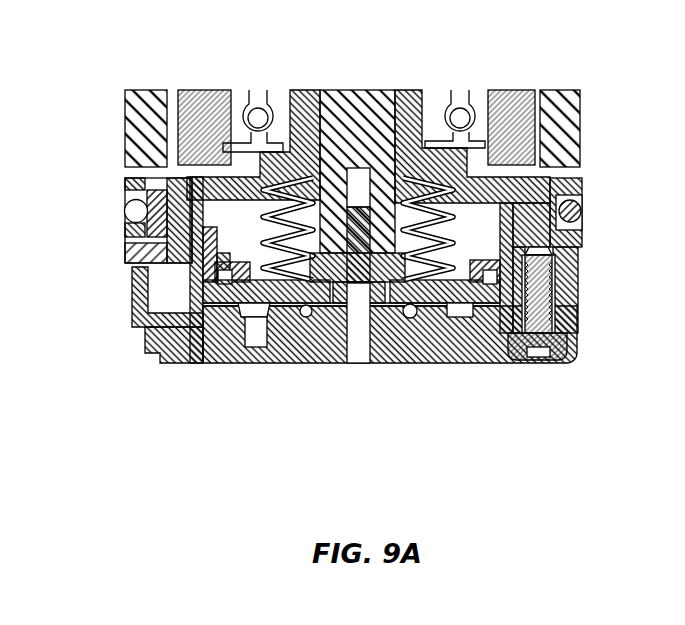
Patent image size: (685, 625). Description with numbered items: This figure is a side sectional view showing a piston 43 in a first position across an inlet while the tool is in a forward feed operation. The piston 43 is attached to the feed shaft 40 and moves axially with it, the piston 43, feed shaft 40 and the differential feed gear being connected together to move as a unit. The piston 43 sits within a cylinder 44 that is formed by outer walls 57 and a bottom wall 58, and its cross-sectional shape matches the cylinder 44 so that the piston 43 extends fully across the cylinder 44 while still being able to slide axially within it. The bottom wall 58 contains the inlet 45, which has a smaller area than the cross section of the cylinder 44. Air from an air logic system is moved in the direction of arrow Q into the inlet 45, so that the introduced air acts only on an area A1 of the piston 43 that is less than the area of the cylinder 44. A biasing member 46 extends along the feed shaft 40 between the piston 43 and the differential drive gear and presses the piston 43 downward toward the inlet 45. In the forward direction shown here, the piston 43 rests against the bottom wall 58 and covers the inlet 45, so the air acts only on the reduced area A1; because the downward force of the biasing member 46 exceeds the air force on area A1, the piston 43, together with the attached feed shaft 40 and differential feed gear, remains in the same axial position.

The feed shaft 40 is at (365, 122).
The piston 43 is at (240, 293).
The cylinder 44 is at (240, 234).
The inlet 45 is at (345, 348).
The biasing member 46 is at (430, 212).
The outer walls 57 is at (507, 240).
The bottom wall 58 is at (410, 336).
The direction of air flow Q is at (358, 380).
The area of the piston exposed through the inlet A1 is at (392, 363).